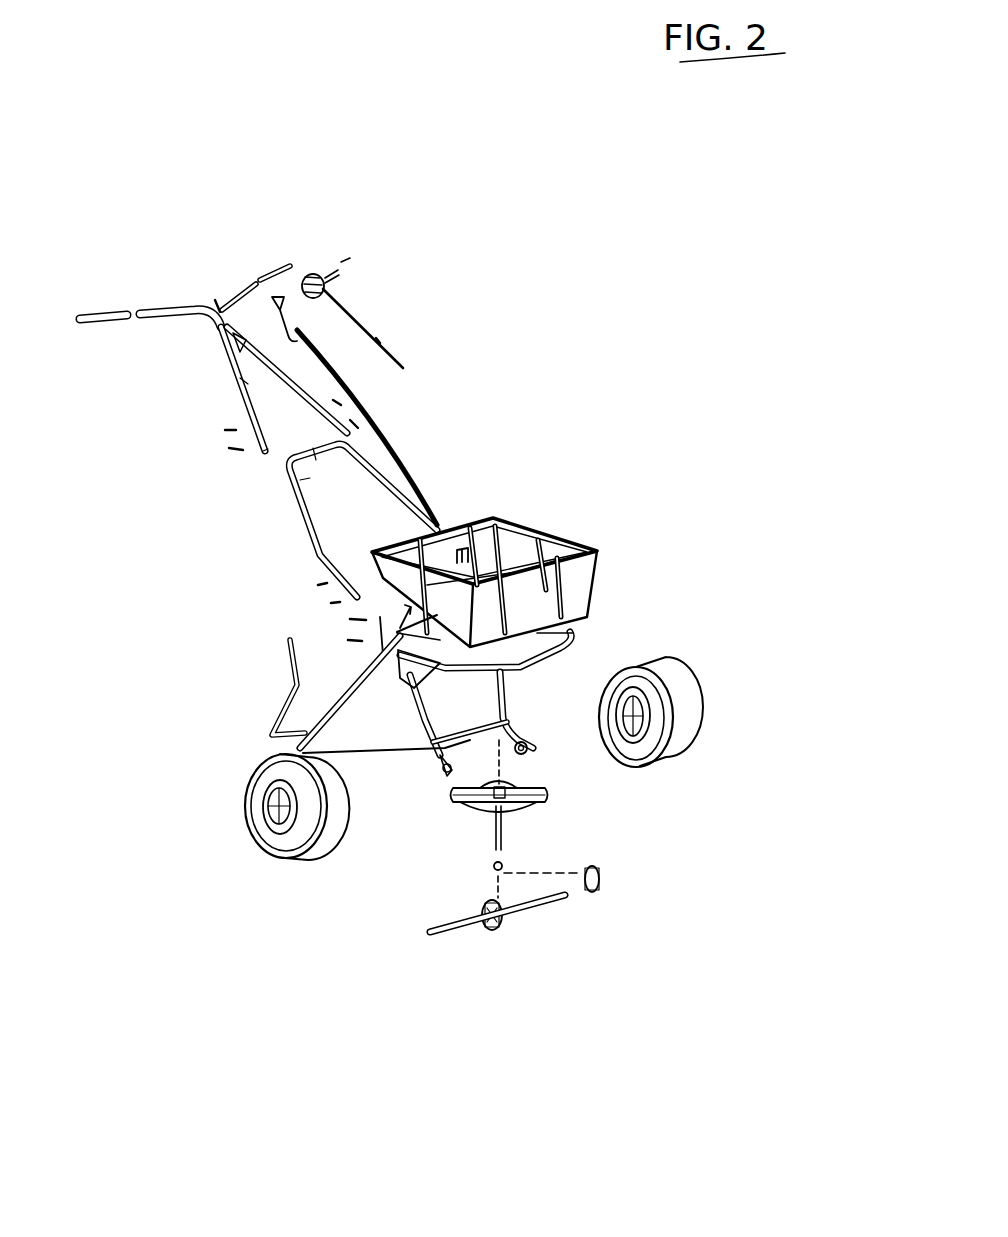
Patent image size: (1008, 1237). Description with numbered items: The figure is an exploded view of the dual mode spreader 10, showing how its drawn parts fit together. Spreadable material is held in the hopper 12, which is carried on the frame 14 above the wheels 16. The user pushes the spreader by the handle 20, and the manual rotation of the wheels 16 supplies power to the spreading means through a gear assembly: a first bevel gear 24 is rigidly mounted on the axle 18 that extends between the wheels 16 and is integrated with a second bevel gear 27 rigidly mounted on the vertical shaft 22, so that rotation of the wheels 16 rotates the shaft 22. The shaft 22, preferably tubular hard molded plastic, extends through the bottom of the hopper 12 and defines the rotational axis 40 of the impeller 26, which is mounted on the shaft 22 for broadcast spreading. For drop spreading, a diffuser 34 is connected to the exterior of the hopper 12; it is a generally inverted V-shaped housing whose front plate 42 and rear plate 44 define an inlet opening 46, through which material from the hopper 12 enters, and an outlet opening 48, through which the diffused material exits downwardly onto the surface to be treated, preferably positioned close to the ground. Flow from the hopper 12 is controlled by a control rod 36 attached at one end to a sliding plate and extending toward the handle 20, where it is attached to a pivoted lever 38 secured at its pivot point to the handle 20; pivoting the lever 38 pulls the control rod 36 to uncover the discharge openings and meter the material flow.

The dual mode spreader 10 is at (634, 308).
The hopper 12 is at (553, 540).
The frame 14 is at (558, 659).
The wheels 16 is at (293, 860).
The axle 18 is at (430, 932).
The handle 20 is at (292, 517).
The vertical shaft 22 is at (495, 821).
The first bevel gear 24 is at (505, 888).
The impeller 26 is at (512, 787).
The second bevel gear 27 is at (600, 885).
The diffuser 34 is at (395, 709).
The control rod 36 is at (377, 423).
The pivoted lever 38 is at (317, 273).
The rotational axis 40 is at (505, 887).
The front plate 42 is at (357, 670).
The rear plate 44 is at (357, 757).
The inlet opening 46 is at (447, 530).
The outlet opening 48 is at (390, 770).